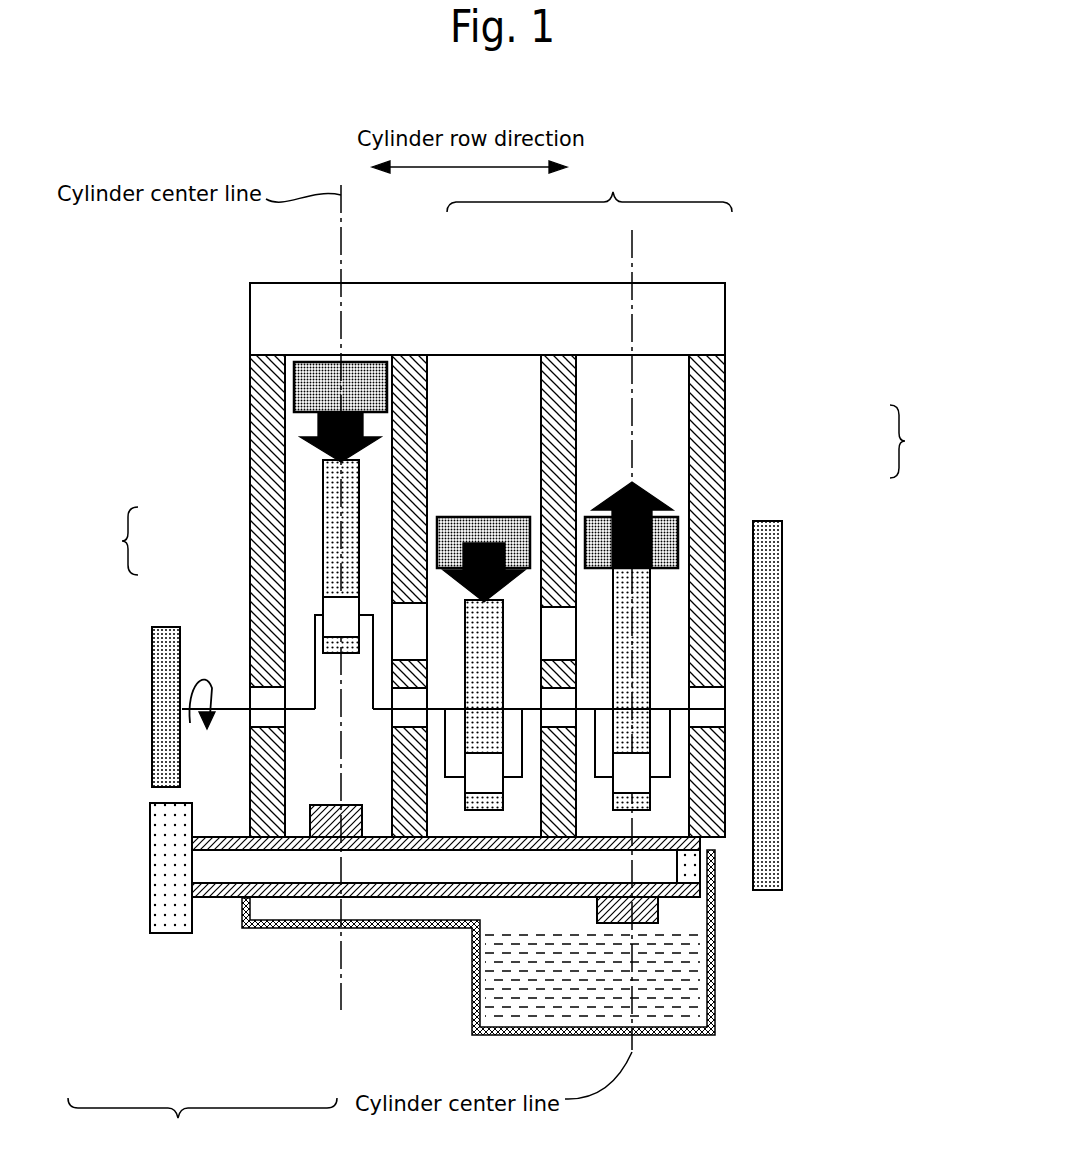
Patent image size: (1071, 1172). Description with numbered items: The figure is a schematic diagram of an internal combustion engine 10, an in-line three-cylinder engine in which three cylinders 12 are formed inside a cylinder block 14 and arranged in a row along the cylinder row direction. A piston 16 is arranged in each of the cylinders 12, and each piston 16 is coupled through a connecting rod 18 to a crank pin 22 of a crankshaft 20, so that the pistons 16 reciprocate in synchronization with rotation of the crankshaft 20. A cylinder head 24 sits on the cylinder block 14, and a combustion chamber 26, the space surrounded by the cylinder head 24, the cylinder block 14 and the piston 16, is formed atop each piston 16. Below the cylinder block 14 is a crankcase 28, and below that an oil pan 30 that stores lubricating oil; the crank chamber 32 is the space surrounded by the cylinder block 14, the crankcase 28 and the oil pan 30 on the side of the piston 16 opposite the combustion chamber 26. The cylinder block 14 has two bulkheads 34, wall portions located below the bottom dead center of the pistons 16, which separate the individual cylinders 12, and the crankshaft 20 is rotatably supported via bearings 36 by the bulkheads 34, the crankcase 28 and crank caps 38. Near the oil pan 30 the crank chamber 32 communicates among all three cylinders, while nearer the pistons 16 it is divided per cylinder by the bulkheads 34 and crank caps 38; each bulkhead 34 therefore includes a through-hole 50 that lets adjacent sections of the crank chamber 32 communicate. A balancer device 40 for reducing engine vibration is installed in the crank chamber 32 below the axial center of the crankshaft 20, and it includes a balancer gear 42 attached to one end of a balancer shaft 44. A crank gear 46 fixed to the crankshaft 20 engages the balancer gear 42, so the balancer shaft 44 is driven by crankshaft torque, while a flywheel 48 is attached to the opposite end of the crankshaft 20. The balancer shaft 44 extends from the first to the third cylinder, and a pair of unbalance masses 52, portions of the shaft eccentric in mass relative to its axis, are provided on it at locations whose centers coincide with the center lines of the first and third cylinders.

The internal combustion engine 10 is at (795, 313).
The cylinders 12 is at (589, 183).
The cylinder block 14 is at (725, 433).
The pistons 16 is at (313, 385).
The connecting rod 18 is at (323, 477).
The crankshaft 20 is at (227, 705).
The crank pin 22 is at (313, 620).
The cylinder head 24 is at (266, 302).
The combustion chamber 26 is at (372, 360).
The crankcase 28 is at (250, 797).
The oil pan 30 is at (715, 990).
The crank chamber 32 is at (202, 1124).
The bulkheads 34 is at (917, 441).
The bearings 36 is at (398, 720).
The crank caps 38 is at (330, 850).
The balancer device 40 is at (151, 954).
The balancer gear 42 is at (157, 895).
The balancer shaft 44 is at (220, 900).
The crank gear 46 is at (152, 740).
The flywheel 48 is at (765, 657).
The through-holes 50 is at (110, 541).
The unbalance masses 52 is at (320, 840).